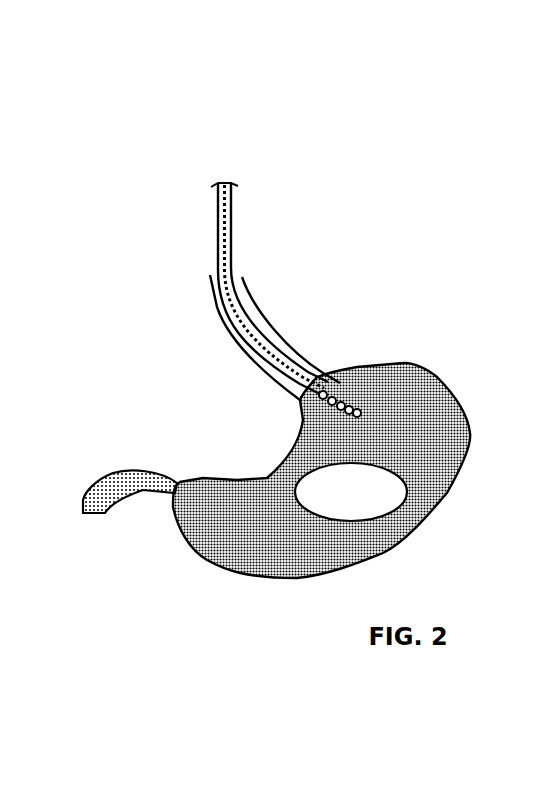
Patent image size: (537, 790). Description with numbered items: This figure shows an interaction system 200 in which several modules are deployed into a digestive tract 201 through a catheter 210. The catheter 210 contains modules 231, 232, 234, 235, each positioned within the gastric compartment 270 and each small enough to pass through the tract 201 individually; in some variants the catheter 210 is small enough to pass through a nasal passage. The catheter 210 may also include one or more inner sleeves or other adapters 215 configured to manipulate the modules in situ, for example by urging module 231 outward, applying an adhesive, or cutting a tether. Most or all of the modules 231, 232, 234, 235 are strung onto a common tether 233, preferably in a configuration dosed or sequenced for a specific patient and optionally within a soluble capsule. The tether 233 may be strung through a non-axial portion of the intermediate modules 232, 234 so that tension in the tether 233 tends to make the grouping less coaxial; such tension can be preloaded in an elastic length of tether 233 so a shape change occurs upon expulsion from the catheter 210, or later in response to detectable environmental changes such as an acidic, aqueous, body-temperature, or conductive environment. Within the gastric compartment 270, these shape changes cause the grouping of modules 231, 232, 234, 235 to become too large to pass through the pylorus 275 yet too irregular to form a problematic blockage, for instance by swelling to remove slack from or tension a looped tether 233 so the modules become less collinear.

The system 200 is at (311, 201).
The tract 201 is at (436, 157).
The catheter 210 is at (217, 218).
The adapter 215 is at (217, 260).
The module 231 is at (327, 387).
The intermediate module 232 is at (297, 417).
The tether 233 is at (349, 397).
The intermediate module 234 is at (357, 407).
The module 235 is at (362, 412).
The gastric compartment 270 is at (242, 508).
The pylorus 275 is at (160, 500).